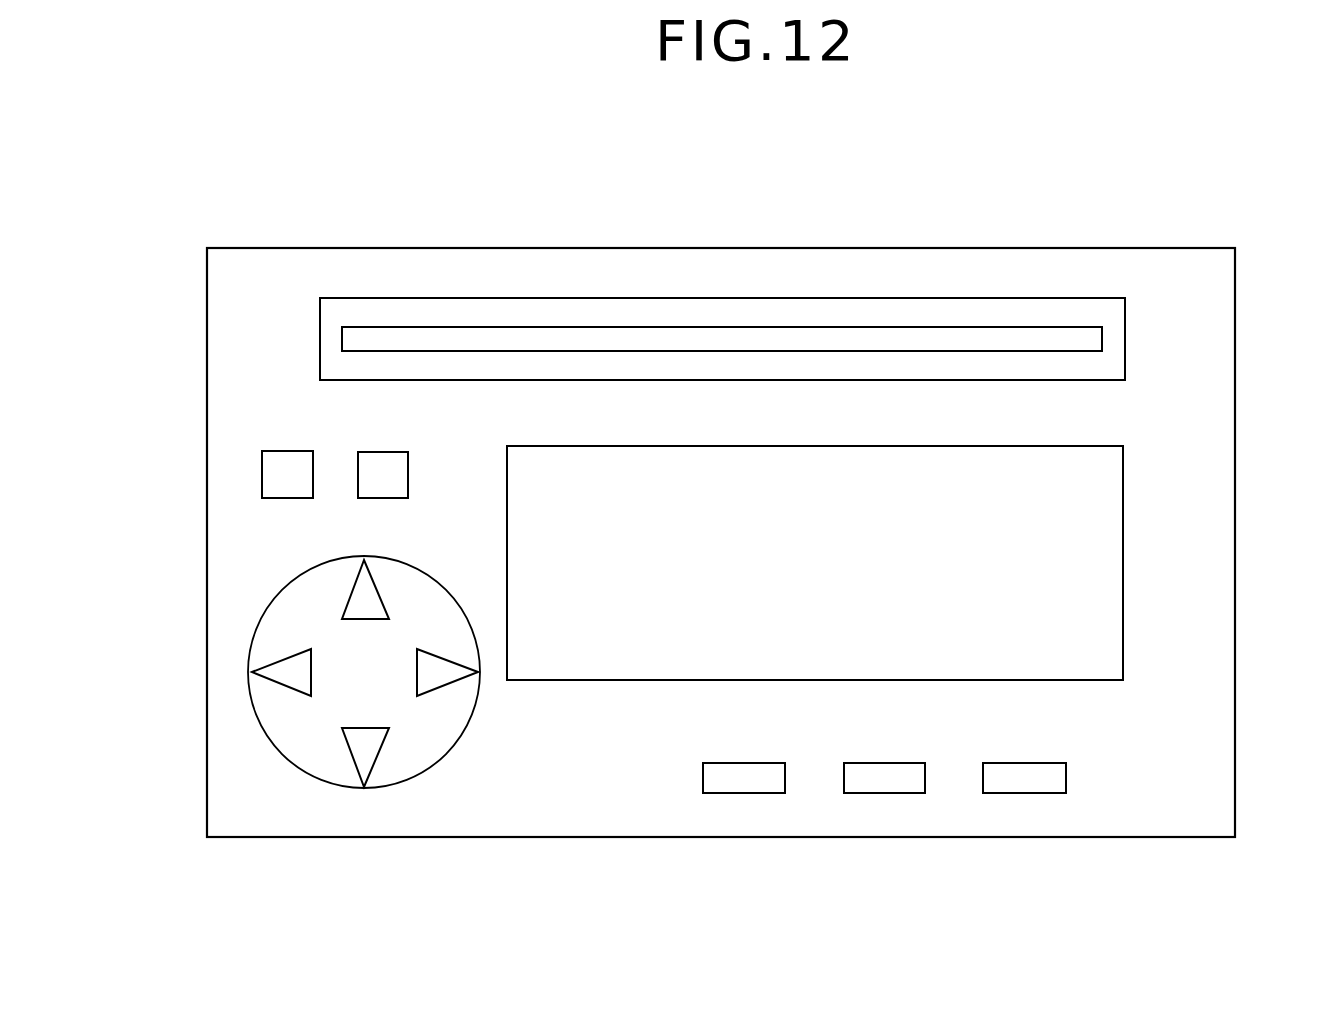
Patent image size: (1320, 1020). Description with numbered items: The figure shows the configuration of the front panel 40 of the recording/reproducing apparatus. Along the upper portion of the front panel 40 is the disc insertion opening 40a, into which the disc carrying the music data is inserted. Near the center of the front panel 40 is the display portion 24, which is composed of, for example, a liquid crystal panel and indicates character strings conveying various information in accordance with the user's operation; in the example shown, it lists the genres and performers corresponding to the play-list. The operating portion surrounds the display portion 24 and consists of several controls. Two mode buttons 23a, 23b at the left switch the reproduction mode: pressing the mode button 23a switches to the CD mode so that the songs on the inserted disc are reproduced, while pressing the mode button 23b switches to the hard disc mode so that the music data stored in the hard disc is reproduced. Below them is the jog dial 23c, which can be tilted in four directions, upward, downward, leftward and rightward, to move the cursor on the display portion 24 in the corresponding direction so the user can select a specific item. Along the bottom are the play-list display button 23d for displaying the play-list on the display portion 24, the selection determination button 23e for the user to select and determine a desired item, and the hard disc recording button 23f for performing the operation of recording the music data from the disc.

The front panel 40 is at (702, 248).
The disc insertion opening 40a is at (918, 298).
The display portion 24 is at (1125, 513).
The mode button 23a is at (261, 465).
The mode button 23b is at (386, 498).
The jog dial 23c is at (250, 715).
The play-list display button 23d is at (748, 793).
The selection determination button 23e is at (888, 793).
The hard disc recording button 23f is at (1027, 793).